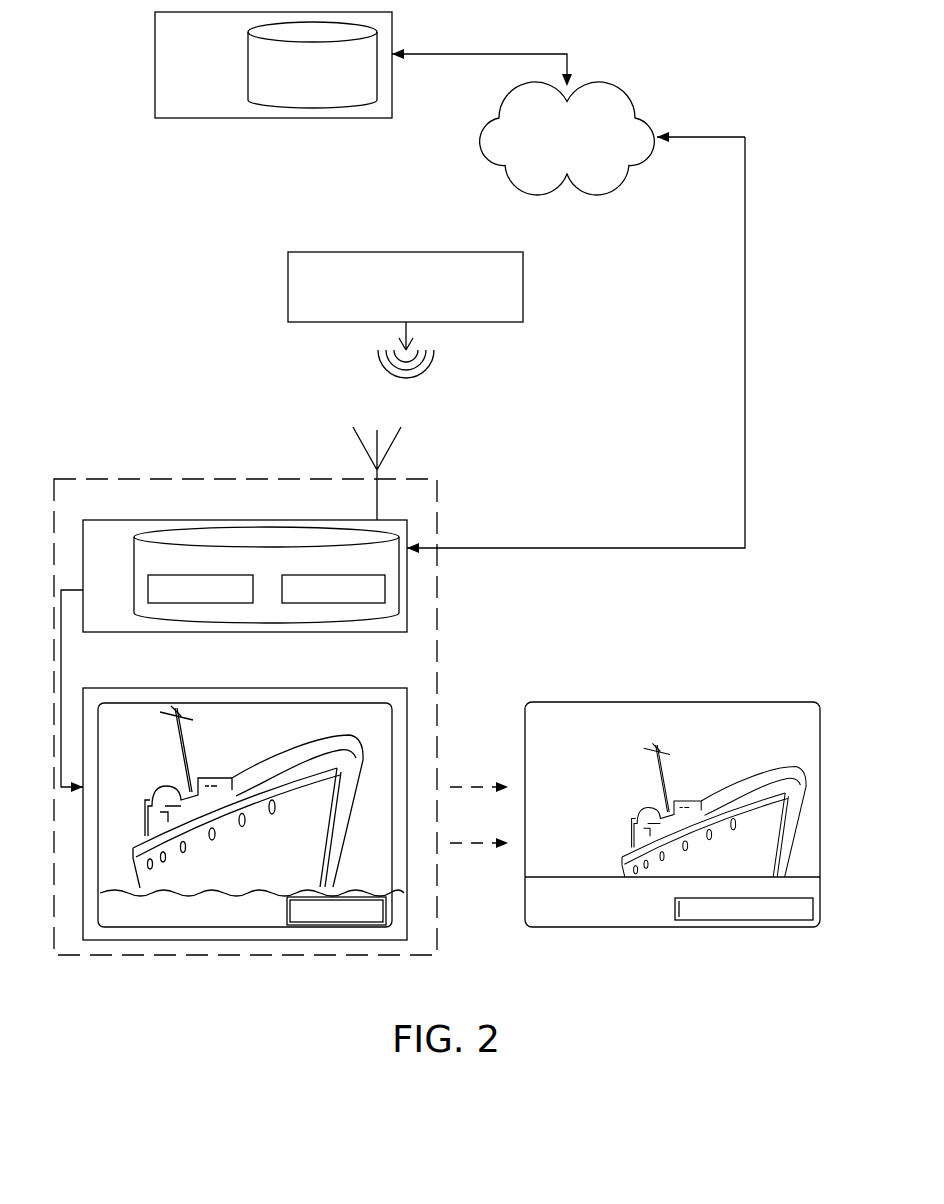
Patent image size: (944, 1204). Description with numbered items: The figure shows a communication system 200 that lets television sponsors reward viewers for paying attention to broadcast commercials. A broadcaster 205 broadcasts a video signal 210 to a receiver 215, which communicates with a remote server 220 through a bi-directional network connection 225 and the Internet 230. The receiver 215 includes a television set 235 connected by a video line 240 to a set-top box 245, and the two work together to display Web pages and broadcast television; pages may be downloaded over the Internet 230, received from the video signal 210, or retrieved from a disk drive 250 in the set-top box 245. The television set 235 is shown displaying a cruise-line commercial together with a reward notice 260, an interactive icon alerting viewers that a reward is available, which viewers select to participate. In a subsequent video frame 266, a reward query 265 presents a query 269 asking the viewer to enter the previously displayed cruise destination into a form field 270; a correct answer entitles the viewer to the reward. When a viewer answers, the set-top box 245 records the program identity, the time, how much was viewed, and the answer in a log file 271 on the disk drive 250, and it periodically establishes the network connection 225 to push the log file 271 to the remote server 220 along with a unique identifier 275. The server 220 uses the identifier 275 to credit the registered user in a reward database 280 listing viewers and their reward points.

The communication system 200 is at (762, 48).
The broadcaster 205 is at (405, 287).
The video signal 210 is at (372, 355).
The receiver 215 is at (211, 478).
The remote server 220 is at (155, 65).
The bi-directional network connection 225 is at (743, 350).
The Internet 230 is at (567, 138).
The television set 235 is at (214, 688).
The video line 240 is at (62, 648).
The set-top box 245 is at (245, 564).
The disk drive 250 is at (214, 535).
The reward notice 260 is at (380, 921).
The reward query 265 is at (583, 921).
The subsequent video frame 266 is at (660, 701).
The query 269 is at (520, 878).
The form field 270 is at (718, 912).
The log file 271 is at (200, 589).
The unique identifier 275 is at (333, 589).
The reward database 280 is at (248, 65).